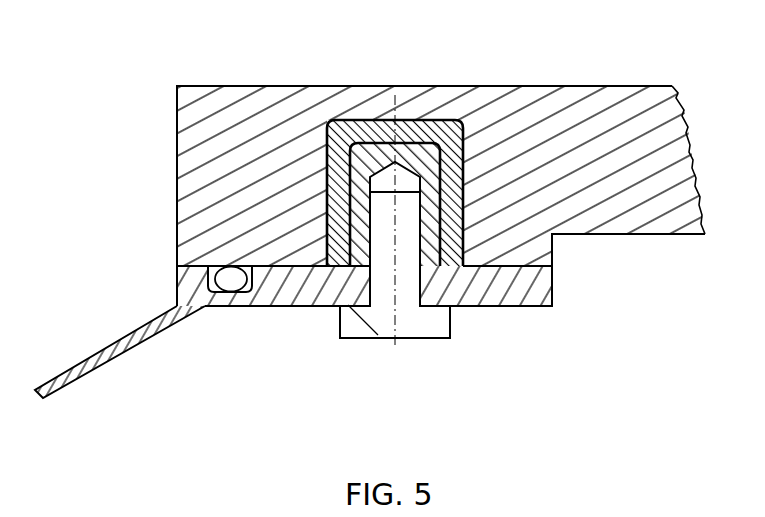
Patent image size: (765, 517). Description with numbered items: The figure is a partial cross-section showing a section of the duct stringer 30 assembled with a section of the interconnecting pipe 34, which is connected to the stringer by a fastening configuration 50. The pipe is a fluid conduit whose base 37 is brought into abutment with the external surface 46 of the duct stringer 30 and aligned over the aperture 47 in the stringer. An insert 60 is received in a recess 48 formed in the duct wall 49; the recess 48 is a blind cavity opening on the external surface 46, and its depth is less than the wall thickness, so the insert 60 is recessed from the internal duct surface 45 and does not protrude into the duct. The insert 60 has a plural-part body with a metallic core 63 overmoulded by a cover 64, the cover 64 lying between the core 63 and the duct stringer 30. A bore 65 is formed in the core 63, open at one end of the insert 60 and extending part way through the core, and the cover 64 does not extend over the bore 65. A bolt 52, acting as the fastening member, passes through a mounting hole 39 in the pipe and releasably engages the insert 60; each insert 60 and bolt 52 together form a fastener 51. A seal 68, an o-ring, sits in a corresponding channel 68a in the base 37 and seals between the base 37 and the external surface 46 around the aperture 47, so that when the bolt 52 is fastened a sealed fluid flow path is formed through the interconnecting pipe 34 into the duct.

The duct stringer 30 is at (255, 107).
The interconnecting pipe 34 is at (112, 355).
The base 37 is at (537, 290).
The mounting holes 39 is at (360, 292).
The internal duct surface 45 is at (643, 86).
The external surface 46 is at (485, 290).
The aperture 47 is at (148, 239).
The recess 48 is at (465, 125).
The duct wall 49 is at (555, 105).
The fastening configuration 50 is at (568, 330).
The fastener 51 is at (381, 338).
The bolt 52 is at (370, 287).
The insert 60 is at (367, 138).
The core 63 is at (312, 273).
The cover 64 is at (326, 208).
The bore 65 is at (413, 128).
The seal 68 is at (226, 292).
The channel 68a is at (258, 300).